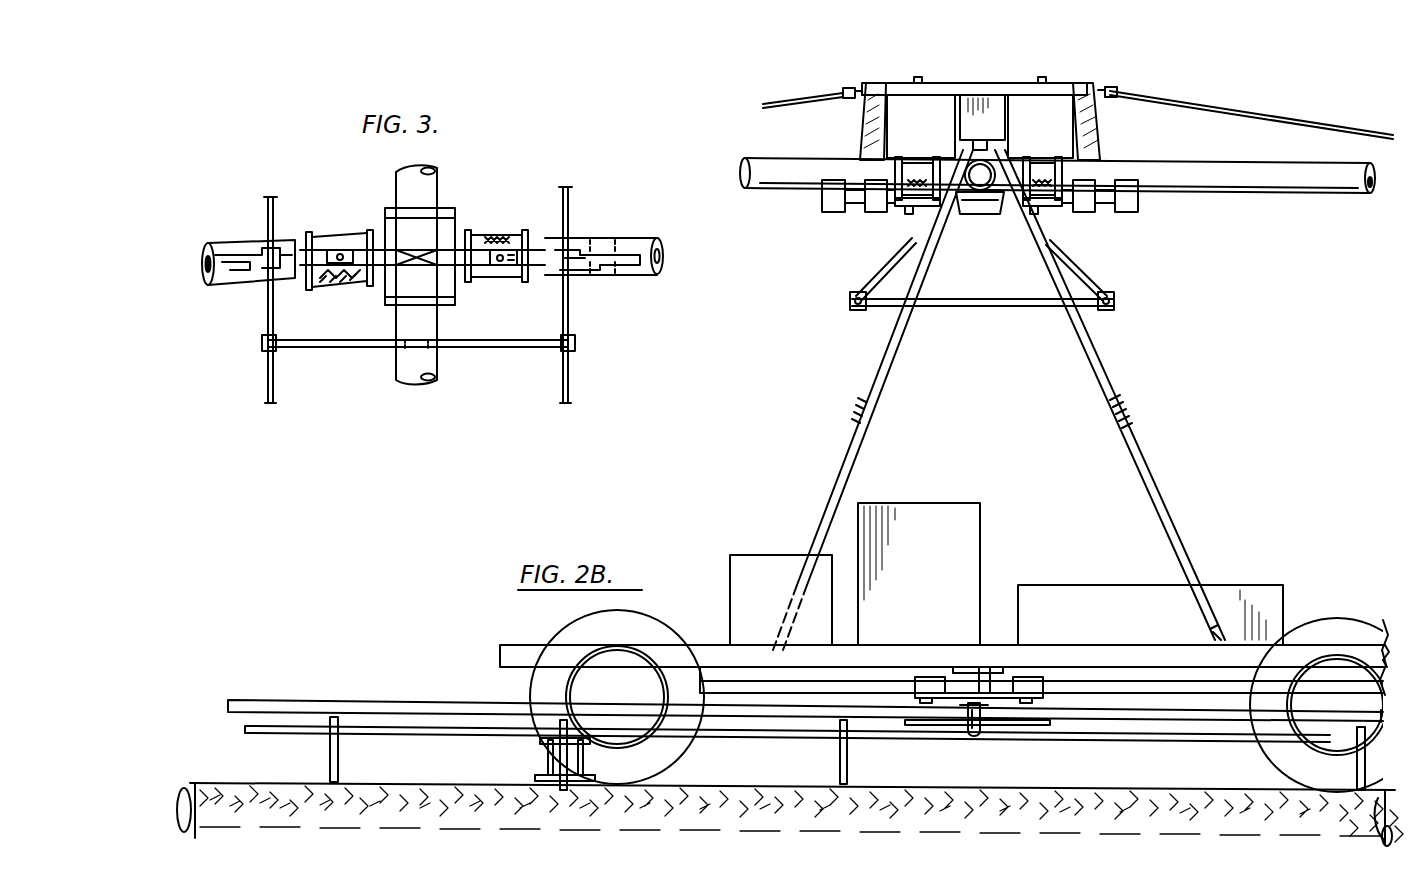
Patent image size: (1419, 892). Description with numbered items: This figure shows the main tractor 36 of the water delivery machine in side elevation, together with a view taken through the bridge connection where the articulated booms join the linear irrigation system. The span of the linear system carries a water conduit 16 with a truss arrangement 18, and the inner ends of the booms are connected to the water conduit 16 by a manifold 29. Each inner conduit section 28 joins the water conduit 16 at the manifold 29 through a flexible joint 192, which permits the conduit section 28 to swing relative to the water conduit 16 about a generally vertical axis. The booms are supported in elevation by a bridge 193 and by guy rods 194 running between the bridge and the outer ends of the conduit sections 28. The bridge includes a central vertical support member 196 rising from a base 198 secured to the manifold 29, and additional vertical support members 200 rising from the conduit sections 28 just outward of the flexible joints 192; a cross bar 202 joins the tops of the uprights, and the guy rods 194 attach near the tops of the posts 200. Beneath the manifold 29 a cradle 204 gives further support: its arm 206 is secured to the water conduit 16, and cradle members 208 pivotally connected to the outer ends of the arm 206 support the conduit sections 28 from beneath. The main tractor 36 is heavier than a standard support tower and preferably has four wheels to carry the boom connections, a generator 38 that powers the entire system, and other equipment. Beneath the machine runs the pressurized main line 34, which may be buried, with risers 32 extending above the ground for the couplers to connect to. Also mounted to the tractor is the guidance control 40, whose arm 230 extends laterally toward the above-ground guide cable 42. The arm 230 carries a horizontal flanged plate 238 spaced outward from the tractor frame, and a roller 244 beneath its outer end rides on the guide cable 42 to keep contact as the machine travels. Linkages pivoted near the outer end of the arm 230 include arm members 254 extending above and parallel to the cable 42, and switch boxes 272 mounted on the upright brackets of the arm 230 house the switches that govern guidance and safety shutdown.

In FIG. 3, the water conduit 16 is at (396, 172).
In FIG. 2B, the water conduit 16 is at (966, 152).
In FIG. 3, the truss arrangement 18 is at (470, 349).
In FIG. 2B, the truss arrangement 18 is at (986, 306).
In FIG. 3, the inner conduit section 28 is at (642, 238).
In FIG. 2B, the inner conduit section 28 is at (763, 187).
In FIG. 3, the manifold 29 is at (416, 282).
In FIG. 2B, the manifold 29 is at (978, 198).
In FIG. 2B, the riser 32 is at (540, 757).
In FIG. 2B, the main line 34 is at (188, 790).
In FIG. 2B, the main tractor 36 is at (1132, 390).
In FIG. 2B, the generator 38 is at (930, 505).
In FIG. 2B, the guidance control 40 is at (996, 646).
In FIG. 2B, the guide cable 42 is at (375, 734).
In FIG. 3, the flexible joint 192 is at (330, 232).
In FIG. 2B, the flexible joint 192 is at (905, 202).
In FIG. 3, the bridge 193 is at (464, 208).
In FIG. 2B, the bridge 193 is at (1094, 86).
In FIG. 3, the guy rods 194 is at (240, 272).
In FIG. 2B, the guy rods 194 is at (770, 102).
In FIG. 2B, the central vertical support member 196 is at (992, 130).
In FIG. 3, the base 198 is at (440, 306).
In FIG. 3, the vertical support members 200 is at (281, 285).
In FIG. 2B, the vertical support members 200 is at (866, 152).
In FIG. 3, the cross bar 202 is at (362, 278).
In FIG. 2B, the cross bar 202 is at (936, 98).
In FIG. 2B, the cradle 204 is at (908, 210).
In FIG. 2B, the arm 206 is at (982, 216).
In FIG. 2B, the cradle members 208 is at (826, 212).
In FIG. 2B, the arm 230 is at (985, 720).
In FIG. 2B, the horizontal flanged plate 238 is at (1050, 727).
In FIG. 2B, the roller 244 is at (990, 736).
In FIG. 2B, the arm member 254 is at (442, 684).
In FIG. 2B, the switch box 272 is at (925, 676).